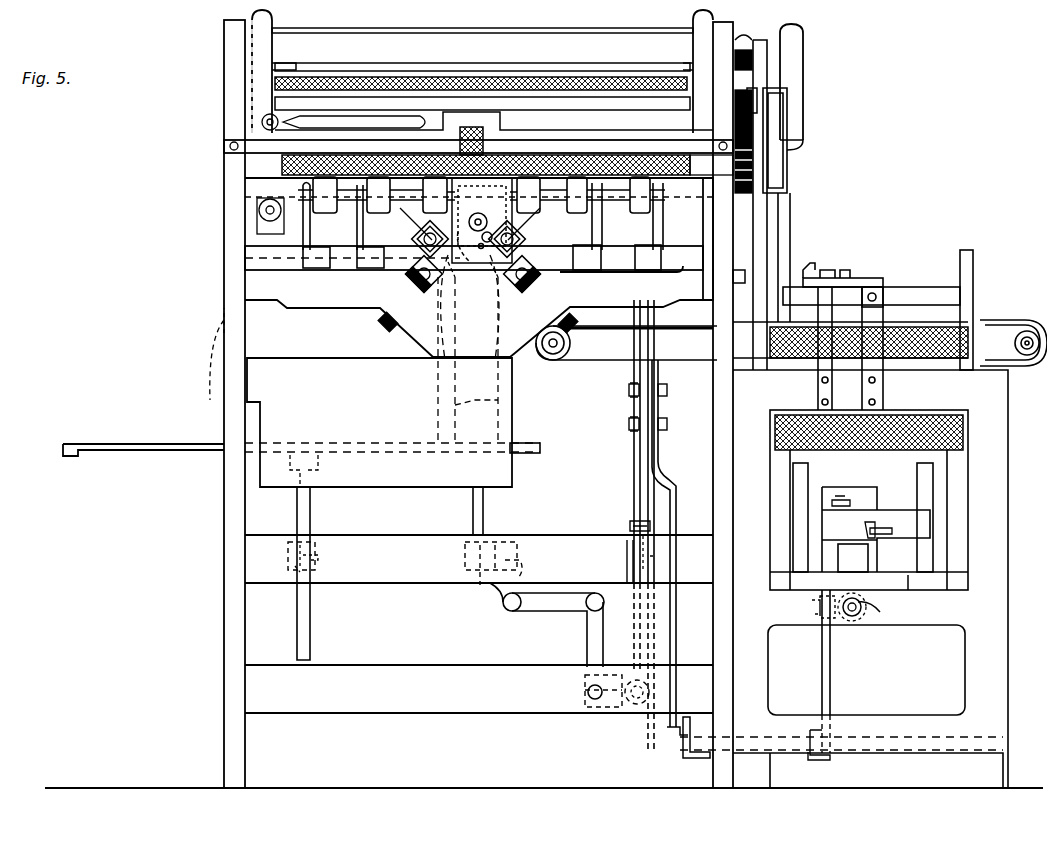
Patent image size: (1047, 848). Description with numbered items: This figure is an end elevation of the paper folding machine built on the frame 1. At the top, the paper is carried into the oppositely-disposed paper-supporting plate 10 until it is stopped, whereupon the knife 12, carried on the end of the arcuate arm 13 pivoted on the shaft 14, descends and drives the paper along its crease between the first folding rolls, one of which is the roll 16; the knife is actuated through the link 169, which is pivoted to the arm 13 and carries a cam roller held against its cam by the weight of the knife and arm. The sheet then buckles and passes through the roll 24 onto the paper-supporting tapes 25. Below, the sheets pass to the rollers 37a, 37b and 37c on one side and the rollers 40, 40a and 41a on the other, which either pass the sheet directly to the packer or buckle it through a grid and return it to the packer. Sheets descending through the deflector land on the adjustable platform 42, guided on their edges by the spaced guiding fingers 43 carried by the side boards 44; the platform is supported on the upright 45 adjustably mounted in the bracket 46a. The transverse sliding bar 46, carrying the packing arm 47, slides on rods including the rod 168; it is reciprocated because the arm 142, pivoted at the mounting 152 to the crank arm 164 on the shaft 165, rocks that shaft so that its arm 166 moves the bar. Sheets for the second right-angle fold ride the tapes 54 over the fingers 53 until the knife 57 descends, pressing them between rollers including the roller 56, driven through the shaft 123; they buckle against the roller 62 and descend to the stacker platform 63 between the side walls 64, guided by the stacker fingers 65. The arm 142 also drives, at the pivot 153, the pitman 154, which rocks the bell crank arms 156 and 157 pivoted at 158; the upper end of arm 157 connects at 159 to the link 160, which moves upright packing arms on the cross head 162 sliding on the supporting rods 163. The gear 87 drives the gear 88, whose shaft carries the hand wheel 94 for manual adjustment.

The frame 1 is at (224, 333).
The paper-supporting plate 10 is at (347, 44).
The knife 12 is at (412, 48).
The arcuate arm 13 is at (260, 25).
The shaft 14 is at (420, 100).
The roll 16 is at (527, 78).
The roll 24 is at (552, 158).
The paper-supporting tapes 25 is at (328, 205).
The roller 37a is at (476, 284).
The roller 37b is at (412, 232).
The roller 37c is at (408, 280).
The roller 40 is at (537, 232).
The roller 40a is at (475, 292).
The roller 41a is at (541, 294).
The adjustable platform 42 is at (532, 443).
The guiding fingers 43 is at (476, 393).
The side boards 44 is at (330, 340).
The upright 45 is at (310, 505).
The sliding bar 46 is at (458, 574).
The bracket 46a is at (286, 577).
The arm 47 is at (473, 516).
The fingers 53 is at (596, 326).
The tapes 54 is at (641, 326).
The roller 56 is at (898, 328).
The knife 57 is at (925, 293).
The roller 62 is at (920, 418).
The stacker platform 63 is at (908, 590).
The side walls 64 is at (778, 521).
The stacker fingers 65 is at (795, 483).
The gear 87 is at (790, 150).
The gear 88 is at (752, 50).
The hand wheel 94 is at (804, 58).
The shaft 123 is at (1030, 360).
The arm 142 is at (632, 524).
The pivotal mounting 152 is at (610, 708).
The pivot 153 is at (630, 427).
The pitman 154 is at (690, 628).
The bell crank arm 156 is at (684, 742).
The bell crank arm 157 is at (821, 682).
The pivot 158 is at (753, 737).
The connection 159 is at (818, 612).
The link 160 is at (832, 622).
The cross head 162 is at (845, 620).
The supporting rods 163 is at (870, 612).
The crank arm 164 is at (640, 706).
The shaft 165 is at (588, 692).
The arm 166 is at (589, 637).
The rod 168 is at (588, 548).
The link 169 is at (790, 218).